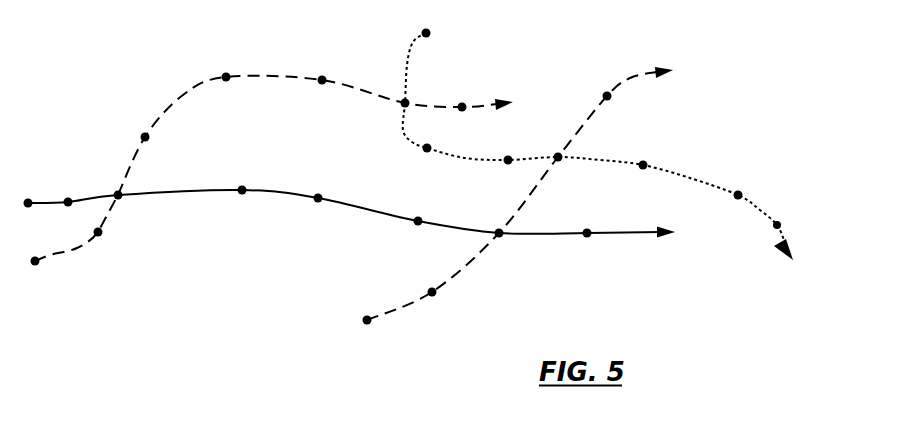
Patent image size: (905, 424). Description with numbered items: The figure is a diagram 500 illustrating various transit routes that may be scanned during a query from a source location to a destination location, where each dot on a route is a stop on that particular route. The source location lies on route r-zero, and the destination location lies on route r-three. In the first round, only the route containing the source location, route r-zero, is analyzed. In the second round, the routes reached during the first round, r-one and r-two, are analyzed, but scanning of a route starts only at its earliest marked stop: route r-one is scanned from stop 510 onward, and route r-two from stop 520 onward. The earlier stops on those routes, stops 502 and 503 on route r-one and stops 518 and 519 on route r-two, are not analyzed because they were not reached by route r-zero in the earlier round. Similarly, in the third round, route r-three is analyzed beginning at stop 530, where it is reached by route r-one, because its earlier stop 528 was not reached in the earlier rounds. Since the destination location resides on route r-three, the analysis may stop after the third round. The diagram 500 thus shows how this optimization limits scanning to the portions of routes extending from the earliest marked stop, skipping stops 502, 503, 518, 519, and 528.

The diagram 500 is at (281, 384).
The stop 502 is at (37, 264).
The stop 503 is at (102, 236).
The stop 510 is at (115, 192).
The stop 518 is at (370, 324).
The stop 519 is at (436, 296).
The stop 520 is at (502, 237).
The stop 528 is at (429, 37).
The stop 530 is at (402, 101).